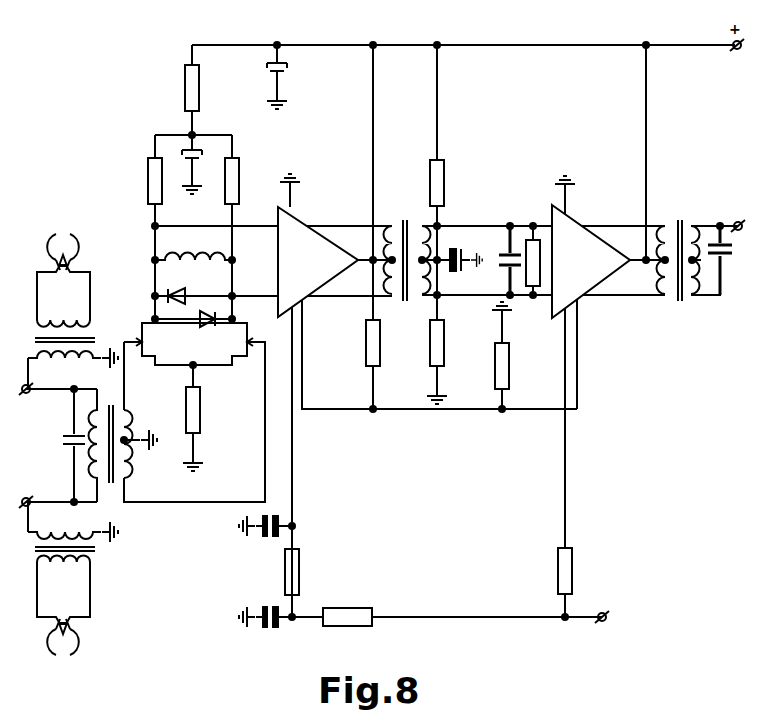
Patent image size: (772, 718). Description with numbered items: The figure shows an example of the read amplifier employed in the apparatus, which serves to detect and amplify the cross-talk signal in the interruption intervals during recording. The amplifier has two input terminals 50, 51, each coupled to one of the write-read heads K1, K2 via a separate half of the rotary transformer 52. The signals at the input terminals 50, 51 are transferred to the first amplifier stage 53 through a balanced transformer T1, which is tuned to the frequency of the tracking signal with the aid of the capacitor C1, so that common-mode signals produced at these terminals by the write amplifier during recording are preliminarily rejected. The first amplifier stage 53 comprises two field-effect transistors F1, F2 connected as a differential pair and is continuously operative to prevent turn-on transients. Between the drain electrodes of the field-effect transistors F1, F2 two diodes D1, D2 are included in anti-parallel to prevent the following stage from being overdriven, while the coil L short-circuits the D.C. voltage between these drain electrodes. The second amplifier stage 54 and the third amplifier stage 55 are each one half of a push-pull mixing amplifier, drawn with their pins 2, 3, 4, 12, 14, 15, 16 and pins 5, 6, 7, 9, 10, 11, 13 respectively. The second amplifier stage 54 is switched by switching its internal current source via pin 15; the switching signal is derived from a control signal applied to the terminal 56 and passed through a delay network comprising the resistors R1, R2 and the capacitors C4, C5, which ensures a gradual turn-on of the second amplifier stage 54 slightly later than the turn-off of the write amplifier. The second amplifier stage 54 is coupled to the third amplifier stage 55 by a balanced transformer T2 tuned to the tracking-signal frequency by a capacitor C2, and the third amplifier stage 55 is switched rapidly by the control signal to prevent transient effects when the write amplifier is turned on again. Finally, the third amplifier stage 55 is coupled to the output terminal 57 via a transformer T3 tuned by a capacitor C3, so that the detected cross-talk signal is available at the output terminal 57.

The input terminal 50 is at (30, 393).
The input terminal 51 is at (30, 499).
The rotary transformer 52 is at (94, 339).
The first amplifier stage 53 is at (194, 397).
The second amplifier stage 54 is at (318, 262).
The third amplifier stage 55 is at (591, 261).
The terminal 56 is at (600, 613).
The output terminal 57 is at (736, 226).
The write-read head K1 is at (80, 645).
The write-read head K2 is at (78, 242).
The capacitor C1 is at (62, 440).
The capacitor C2 is at (505, 259).
The capacitor C3 is at (708, 254).
The capacitor C4 is at (270, 628).
The capacitor C5 is at (271, 538).
The diode D1 is at (182, 293).
The diode D2 is at (198, 323).
The field-effect transistor F1 is at (141, 360).
The field-effect transistor F2 is at (248, 360).
The coil L is at (180, 252).
The resistor R1 is at (355, 608).
The resistor R2 is at (299, 562).
The balanced transformer T1 is at (112, 486).
The balanced transformer T2 is at (405, 221).
The transformer T3 is at (680, 221).
The amplifier pin 2 is at (436, 354).
The amplifier pin 3 is at (255, 218).
The amplifier pin 4 is at (255, 306).
The amplifier pin 5 is at (542, 218).
The amplifier pin 6 is at (542, 305).
The amplifier pin 7 is at (575, 354).
The amplifier pin 9 is at (564, 195).
The amplifier pin 10 is at (557, 462).
The amplifier pin 11 is at (623, 218).
The amplifier pin 12 is at (349, 218).
The amplifier pin 13 is at (624, 305).
The amplifier pin 14 is at (349, 306).
The pin 15 is at (285, 462).
The amplifier pin 16 is at (288, 190).